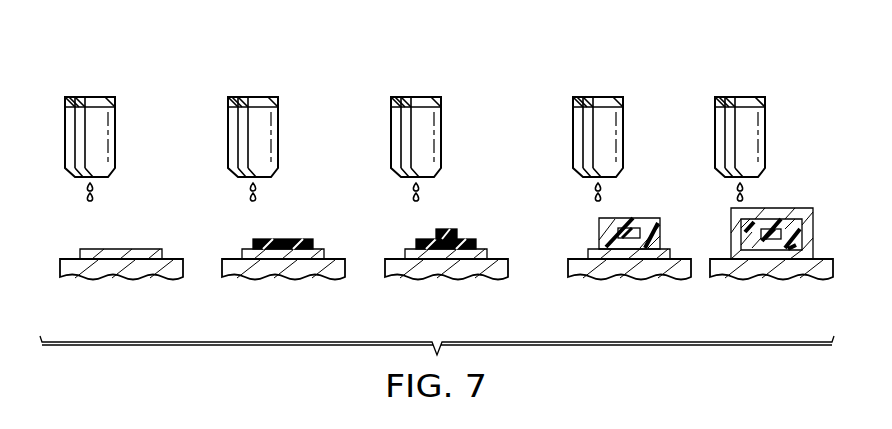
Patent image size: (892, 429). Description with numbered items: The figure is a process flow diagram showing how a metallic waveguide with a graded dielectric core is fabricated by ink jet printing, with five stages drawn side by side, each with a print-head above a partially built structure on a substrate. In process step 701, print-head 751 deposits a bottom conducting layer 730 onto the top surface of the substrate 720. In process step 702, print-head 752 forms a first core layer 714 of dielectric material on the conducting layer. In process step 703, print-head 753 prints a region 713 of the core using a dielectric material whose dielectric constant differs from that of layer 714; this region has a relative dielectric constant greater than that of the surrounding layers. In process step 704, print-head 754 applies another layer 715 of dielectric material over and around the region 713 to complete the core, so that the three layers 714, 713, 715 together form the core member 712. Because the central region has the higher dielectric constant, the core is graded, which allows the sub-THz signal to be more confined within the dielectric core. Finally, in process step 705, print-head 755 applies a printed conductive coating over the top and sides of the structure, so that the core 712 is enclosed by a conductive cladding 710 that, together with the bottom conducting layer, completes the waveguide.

The process step 701 is at (112, 183).
The process step 702 is at (273, 183).
The process step 703 is at (436, 183).
The process step 704 is at (612, 183).
The process step 705 is at (771, 183).
The conductive cladding 710 is at (798, 210).
The core member 712 is at (651, 218).
The region of the core 713 is at (450, 230).
The first core layer 714 is at (285, 240).
The layer of dielectric material 715 is at (607, 232).
The substrate 720 is at (70, 265).
The bottom conducting layer 730 is at (120, 250).
The print-head 751 is at (79, 97).
The print-head 752 is at (242, 97).
The print-head 753 is at (406, 97).
The print-head 754 is at (610, 97).
The print-head 755 is at (753, 97).